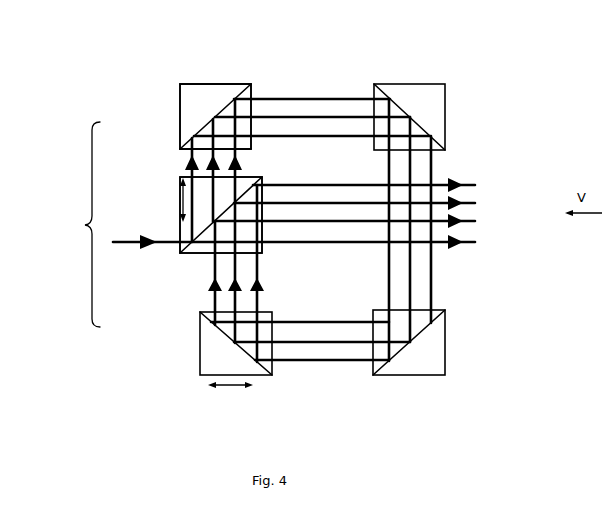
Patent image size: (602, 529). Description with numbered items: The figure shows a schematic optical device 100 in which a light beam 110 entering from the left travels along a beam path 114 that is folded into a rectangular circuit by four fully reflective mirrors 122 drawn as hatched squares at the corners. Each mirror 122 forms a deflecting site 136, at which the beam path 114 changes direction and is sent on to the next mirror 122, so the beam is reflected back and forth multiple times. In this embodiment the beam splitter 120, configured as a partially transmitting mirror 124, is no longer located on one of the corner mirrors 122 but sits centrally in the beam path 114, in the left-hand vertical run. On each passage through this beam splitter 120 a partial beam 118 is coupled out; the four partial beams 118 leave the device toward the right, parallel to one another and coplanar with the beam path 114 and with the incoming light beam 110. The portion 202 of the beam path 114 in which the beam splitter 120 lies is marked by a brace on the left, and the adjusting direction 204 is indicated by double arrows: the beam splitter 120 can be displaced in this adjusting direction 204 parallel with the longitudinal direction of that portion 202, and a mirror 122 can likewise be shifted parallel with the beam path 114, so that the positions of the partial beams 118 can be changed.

The optical device 100 is at (192, 63).
The fully reflective mirror 122 is at (219, 114).
The deflecting site 136 is at (218, 112).
The beam splitter 120 is at (262, 200).
The partially transmitting mirror 124 is at (221, 215).
The partial beam 118 is at (477, 181).
The light beam 110 is at (172, 244).
The adjusting direction 204 is at (180, 197).
The portion of the beam path 202 is at (72, 224).
The beam path 114 is at (302, 262).